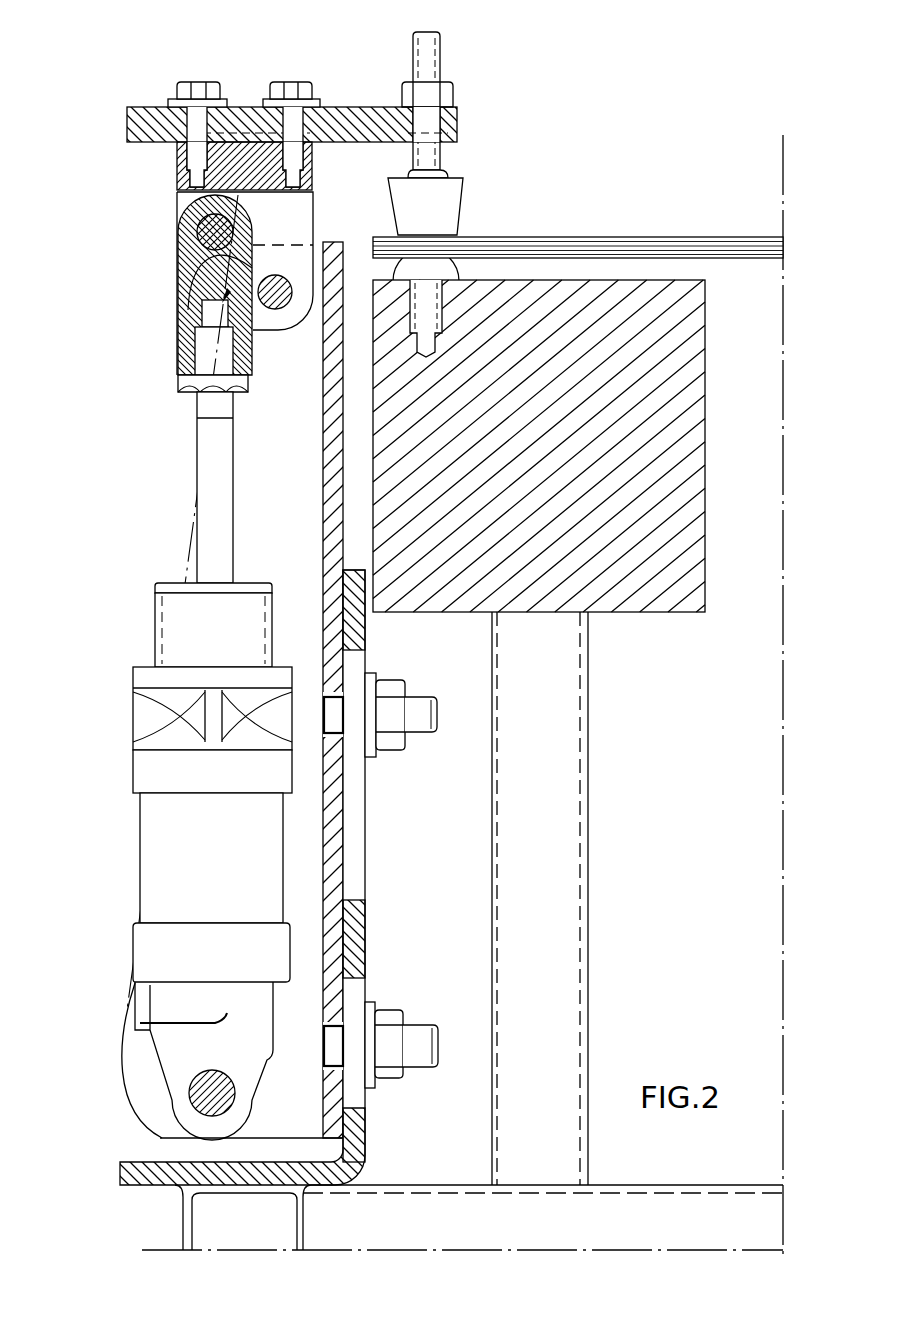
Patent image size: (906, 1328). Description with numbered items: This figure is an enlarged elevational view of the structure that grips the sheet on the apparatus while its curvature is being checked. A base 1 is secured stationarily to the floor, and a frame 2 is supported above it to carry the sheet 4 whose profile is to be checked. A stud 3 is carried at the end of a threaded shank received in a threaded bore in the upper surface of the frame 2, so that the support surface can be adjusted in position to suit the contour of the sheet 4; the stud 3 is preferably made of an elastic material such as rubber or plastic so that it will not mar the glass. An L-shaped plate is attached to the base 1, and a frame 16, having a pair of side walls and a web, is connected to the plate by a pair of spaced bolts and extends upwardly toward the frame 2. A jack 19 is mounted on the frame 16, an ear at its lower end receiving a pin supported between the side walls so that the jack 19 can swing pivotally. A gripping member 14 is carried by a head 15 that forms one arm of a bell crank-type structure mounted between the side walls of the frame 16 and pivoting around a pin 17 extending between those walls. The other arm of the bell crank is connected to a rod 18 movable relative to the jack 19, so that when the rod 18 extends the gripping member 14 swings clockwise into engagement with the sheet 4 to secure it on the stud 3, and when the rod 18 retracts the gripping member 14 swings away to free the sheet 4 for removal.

The base 1 is at (592, 877).
The frame 2 is at (667, 478).
The stud 3 is at (432, 275).
The sheet 4 is at (640, 233).
The gripping member 14 is at (443, 218).
The head 15 is at (368, 98).
The frame 16 is at (330, 527).
The pin 17 is at (285, 309).
The rod 18 is at (223, 490).
The jack 19 is at (136, 843).